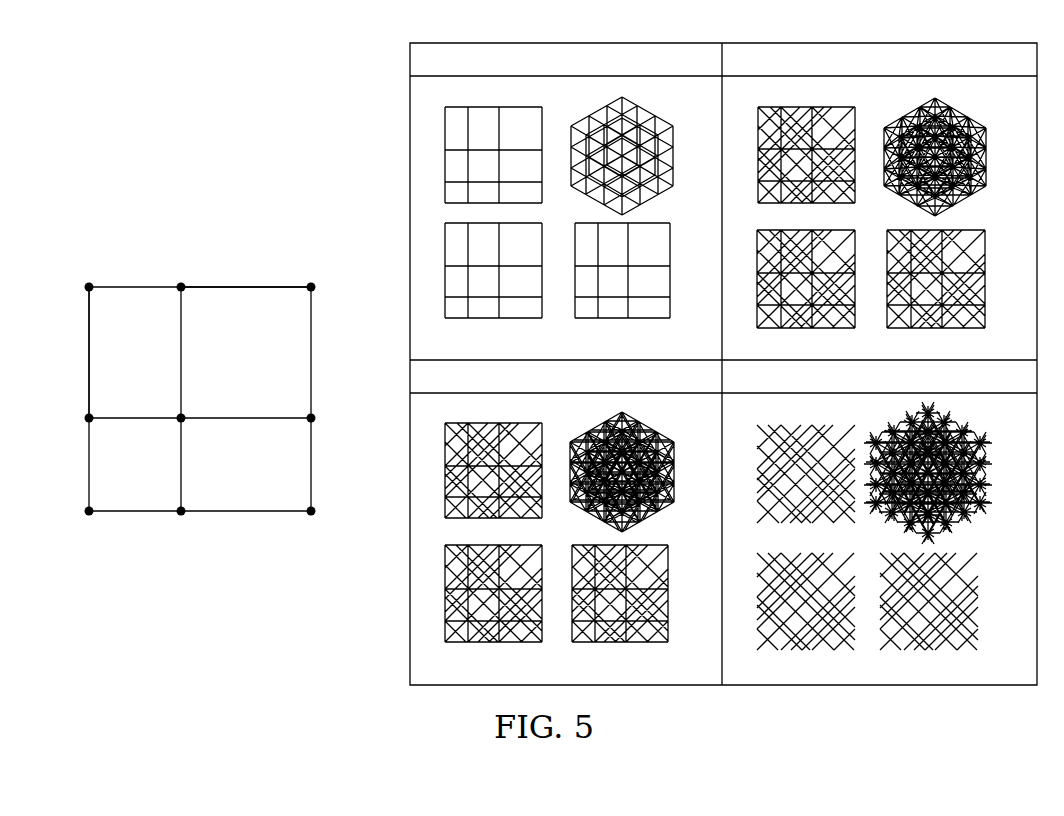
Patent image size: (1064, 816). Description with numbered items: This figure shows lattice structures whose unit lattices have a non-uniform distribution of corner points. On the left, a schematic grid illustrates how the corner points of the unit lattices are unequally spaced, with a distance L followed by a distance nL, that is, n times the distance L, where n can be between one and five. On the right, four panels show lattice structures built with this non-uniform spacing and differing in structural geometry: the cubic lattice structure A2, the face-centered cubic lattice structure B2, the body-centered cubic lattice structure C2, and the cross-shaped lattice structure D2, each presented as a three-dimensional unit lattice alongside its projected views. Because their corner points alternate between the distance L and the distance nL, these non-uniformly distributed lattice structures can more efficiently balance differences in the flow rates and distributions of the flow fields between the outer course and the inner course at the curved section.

The cubic lattice structure A2 is at (559, 186).
The face-centered cubic lattice structure B2 is at (871, 191).
The body-centered cubic lattice structure C2 is at (559, 506).
The cross-shaped lattice structure D2 is at (874, 510).
The distance L is at (200, 414).
The distance nL is at (200, 397).